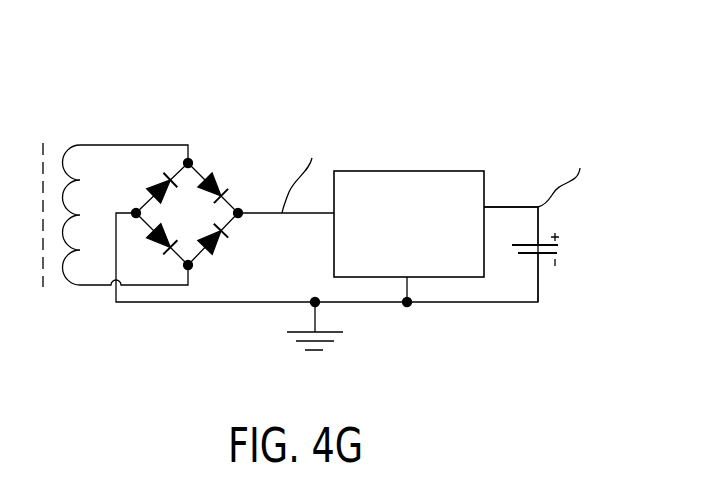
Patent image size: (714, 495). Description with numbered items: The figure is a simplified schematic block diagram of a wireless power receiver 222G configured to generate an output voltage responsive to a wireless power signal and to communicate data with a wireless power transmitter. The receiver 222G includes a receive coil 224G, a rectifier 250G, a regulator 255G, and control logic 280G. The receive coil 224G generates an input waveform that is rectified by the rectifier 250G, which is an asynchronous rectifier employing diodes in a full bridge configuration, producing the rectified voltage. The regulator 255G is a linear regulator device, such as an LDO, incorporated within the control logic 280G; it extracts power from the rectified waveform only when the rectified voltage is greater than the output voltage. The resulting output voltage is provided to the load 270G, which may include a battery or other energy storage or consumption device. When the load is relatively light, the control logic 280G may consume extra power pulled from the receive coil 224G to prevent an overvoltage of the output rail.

The wireless power receiver 222G is at (372, 95).
The receive coil 224G is at (88, 285).
The rectifier 250G is at (206, 150).
The regulator 255G is at (430, 150).
The control logic 280G is at (473, 170).
The load 270G is at (563, 243).